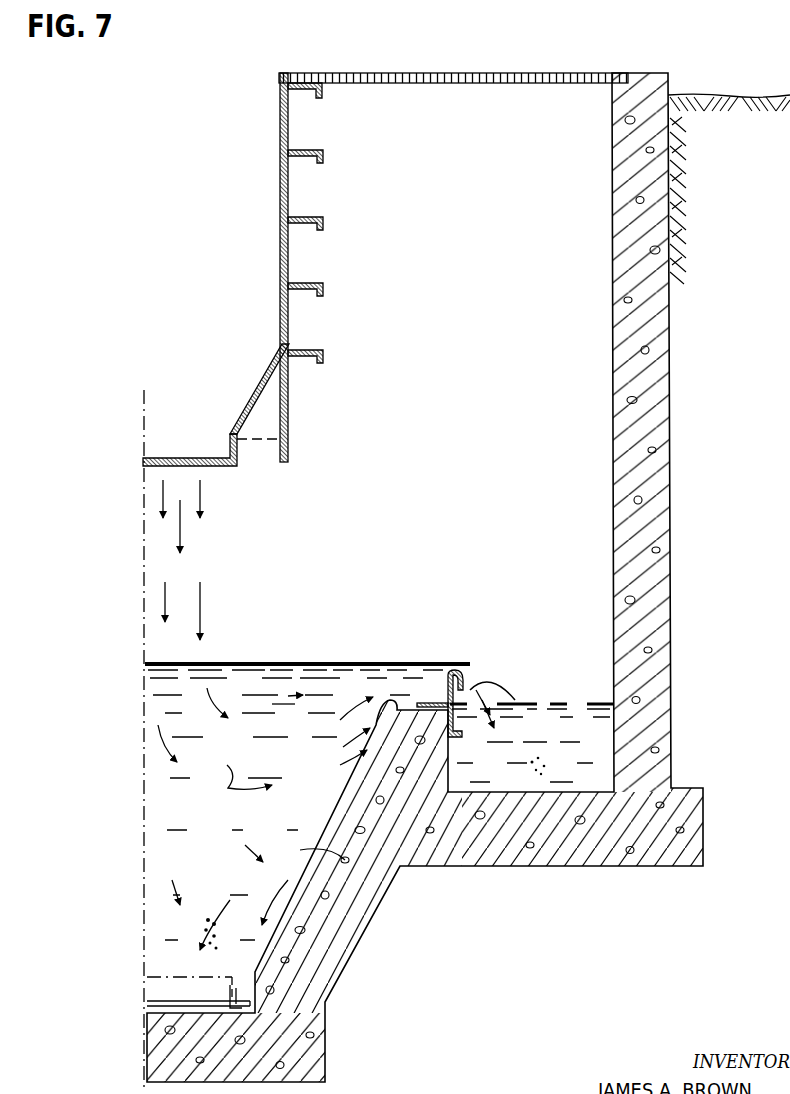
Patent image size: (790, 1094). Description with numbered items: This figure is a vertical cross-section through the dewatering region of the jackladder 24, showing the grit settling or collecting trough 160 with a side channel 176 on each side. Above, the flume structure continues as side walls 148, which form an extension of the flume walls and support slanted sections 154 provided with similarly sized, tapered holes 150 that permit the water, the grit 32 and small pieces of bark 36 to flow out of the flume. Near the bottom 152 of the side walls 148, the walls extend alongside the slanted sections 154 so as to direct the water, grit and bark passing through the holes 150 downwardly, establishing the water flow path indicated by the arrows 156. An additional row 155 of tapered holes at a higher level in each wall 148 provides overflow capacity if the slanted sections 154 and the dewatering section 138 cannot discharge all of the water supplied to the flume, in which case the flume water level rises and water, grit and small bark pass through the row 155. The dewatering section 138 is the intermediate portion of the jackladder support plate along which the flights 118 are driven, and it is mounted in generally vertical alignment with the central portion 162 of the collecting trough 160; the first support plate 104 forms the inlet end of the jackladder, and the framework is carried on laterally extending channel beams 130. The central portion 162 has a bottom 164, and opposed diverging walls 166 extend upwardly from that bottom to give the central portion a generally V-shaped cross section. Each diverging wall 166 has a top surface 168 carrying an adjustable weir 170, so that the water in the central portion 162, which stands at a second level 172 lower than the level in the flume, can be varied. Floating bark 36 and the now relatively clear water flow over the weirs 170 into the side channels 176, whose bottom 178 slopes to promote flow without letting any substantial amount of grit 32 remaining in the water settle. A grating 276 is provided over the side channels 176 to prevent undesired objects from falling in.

The jackladder 24 is at (255, 448).
The grit 32 is at (540, 762).
The small bark 36 is at (405, 663).
The first support plate 104 is at (165, 456).
The flights 118 is at (178, 985).
The channel beams 130 is at (308, 283).
The dewatering section 138 is at (201, 469).
The side walls 148 is at (289, 188).
The tapered holes 150 is at (253, 412).
The bottom of side walls 152 is at (284, 345).
The slanted sections 154 is at (272, 380).
The additional row of tapered holes 155 is at (289, 318).
The water flow path arrows 156 is at (181, 545).
The grit settling or collecting trough 160 is at (356, 960).
The central portion 162 is at (312, 872).
The bottom 164 is at (152, 1008).
The diverging walls 166 is at (315, 855).
The top surface 168 is at (330, 730).
The adjustable weir 170 is at (453, 690).
The second water level 172 is at (293, 660).
The side channel 176 is at (577, 712).
The bottom of side channel 178 is at (600, 795).
The grating 276 is at (483, 73).